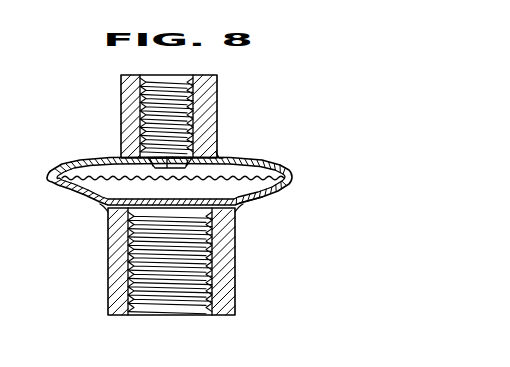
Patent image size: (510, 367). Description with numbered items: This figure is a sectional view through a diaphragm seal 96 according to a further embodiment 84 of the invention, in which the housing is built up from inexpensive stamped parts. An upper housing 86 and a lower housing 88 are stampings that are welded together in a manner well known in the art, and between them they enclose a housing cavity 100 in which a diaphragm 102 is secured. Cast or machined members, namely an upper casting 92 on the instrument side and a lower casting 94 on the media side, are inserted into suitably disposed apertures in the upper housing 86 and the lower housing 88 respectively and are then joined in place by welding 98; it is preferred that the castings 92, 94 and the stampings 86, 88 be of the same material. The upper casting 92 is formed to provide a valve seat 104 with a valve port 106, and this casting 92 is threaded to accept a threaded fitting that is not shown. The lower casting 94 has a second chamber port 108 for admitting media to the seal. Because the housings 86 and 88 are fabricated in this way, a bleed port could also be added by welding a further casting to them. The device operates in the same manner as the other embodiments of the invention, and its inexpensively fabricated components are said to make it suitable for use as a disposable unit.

The embodiment 84 is at (278, 137).
The upper housing 86 is at (70, 161).
The lower housing 88 is at (258, 205).
The upper casting 92 is at (218, 100).
The lower casting 94 is at (236, 302).
The diaphragm seal 96 is at (296, 200).
The welding 98 is at (220, 157).
The housing cavity 100 is at (88, 190).
The diaphragm 102 is at (112, 178).
The valve seat 104 is at (176, 172).
The valve port 106 is at (167, 157).
The second chamber port 108 is at (157, 208).